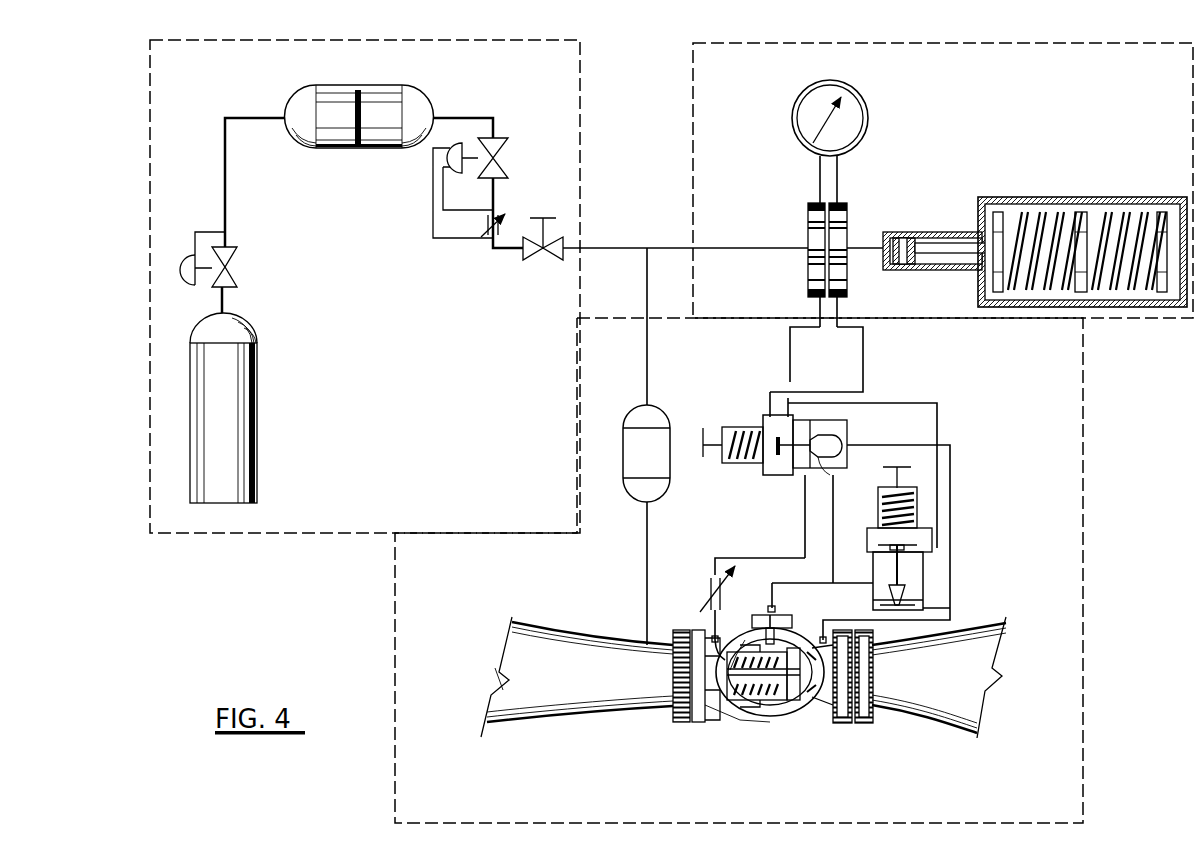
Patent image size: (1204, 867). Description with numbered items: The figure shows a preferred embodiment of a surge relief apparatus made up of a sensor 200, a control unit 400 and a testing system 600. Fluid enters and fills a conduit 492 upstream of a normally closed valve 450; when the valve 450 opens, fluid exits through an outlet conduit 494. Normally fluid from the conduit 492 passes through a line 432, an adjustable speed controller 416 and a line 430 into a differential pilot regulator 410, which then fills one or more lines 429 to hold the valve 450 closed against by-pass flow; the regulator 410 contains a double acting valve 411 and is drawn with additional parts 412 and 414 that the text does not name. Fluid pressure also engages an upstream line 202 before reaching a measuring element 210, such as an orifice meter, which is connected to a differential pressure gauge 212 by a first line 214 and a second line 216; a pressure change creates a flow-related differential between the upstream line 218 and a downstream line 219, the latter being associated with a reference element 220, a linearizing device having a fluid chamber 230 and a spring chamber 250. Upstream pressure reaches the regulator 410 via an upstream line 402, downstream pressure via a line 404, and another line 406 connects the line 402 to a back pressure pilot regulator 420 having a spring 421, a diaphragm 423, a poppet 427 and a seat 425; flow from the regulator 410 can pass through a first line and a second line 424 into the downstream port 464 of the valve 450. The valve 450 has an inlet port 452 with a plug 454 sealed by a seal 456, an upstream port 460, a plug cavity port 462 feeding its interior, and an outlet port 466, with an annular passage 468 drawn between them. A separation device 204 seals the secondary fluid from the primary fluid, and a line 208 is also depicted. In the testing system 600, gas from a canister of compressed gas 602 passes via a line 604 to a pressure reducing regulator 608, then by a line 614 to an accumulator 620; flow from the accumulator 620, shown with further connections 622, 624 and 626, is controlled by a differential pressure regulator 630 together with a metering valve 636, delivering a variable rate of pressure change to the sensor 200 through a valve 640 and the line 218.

The sensor 200 is at (1123, 93).
The upstream line 202 is at (647, 604).
The separation device 204 is at (622, 465).
The supply line 208 is at (647, 342).
The measuring element 210 is at (870, 206).
The differential pressure gauge 212 is at (810, 92).
The first line 214 is at (818, 172).
The second line 216 is at (840, 175).
The line 218 is at (773, 247).
The line 219 is at (876, 245).
The reference element 220 is at (1002, 185).
The fluid chamber 230 is at (953, 262).
The spring chamber 250 is at (1048, 210).
The control unit 400 is at (883, 793).
The upstream line 402 is at (865, 343).
The line 404 is at (789, 343).
The line 406 is at (931, 553).
The differential pilot regulator 410 is at (735, 419).
The double acting valve 411 is at (825, 460).
The valve housing 412 is at (775, 414).
The spring 414 is at (754, 463).
The adjustable speed controller 416 is at (710, 595).
The back pressure pilot regulator 420 is at (927, 479).
The spring 421 is at (918, 507).
The diaphragm 423 is at (932, 540).
The second line 424 is at (932, 612).
The seat 425 is at (913, 605).
The poppet 427 is at (921, 590).
The lines 429 is at (833, 507).
The line 430 is at (766, 558).
The line 432 is at (712, 617).
The valve 450 is at (769, 718).
The inlet port 452 is at (702, 677).
The plug 454 is at (750, 698).
The seal 456 is at (684, 720).
The upstream port 460 is at (698, 658).
The plug cavity port 462 is at (775, 630).
The downstream port 464 is at (811, 638).
The outlet port 466 is at (822, 680).
The passage 468 is at (745, 640).
The conduit 492 is at (520, 688).
The outlet conduit 494 is at (910, 702).
The testing system 600 is at (411, 370).
The canister of compressed gas 602 is at (257, 435).
The line 604 is at (230, 307).
The pressure reducing regulator 608 is at (248, 258).
The line 614 is at (237, 115).
The accumulator 620 is at (333, 85).
The line 622 is at (443, 110).
The valve actuator 624 is at (433, 163).
The control line 626 is at (440, 198).
The differential pressure regulator 630 is at (513, 140).
The metering valve 636 is at (505, 216).
The valve 640 is at (548, 262).